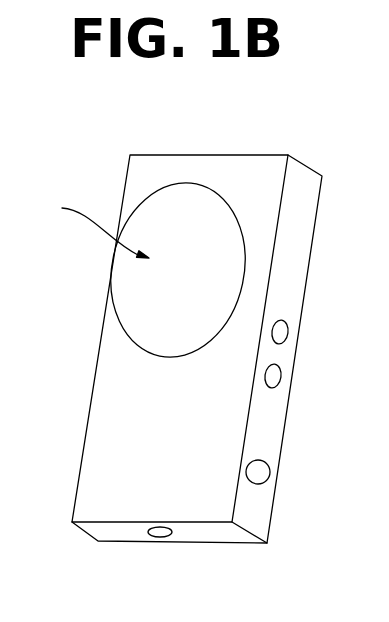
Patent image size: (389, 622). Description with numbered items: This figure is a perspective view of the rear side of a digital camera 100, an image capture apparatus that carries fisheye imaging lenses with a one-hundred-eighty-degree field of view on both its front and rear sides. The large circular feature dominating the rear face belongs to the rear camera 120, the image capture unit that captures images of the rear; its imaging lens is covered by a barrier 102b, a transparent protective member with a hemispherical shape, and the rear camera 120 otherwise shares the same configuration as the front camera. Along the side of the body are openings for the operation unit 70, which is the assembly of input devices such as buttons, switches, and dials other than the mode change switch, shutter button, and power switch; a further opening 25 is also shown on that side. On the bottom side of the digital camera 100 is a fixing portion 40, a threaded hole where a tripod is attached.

The digital camera 100 is at (204, 155).
The barrier 102b is at (132, 300).
The rear camera 120 is at (82, 226).
The operation unit 70 is at (285, 333).
The connector hole 25 is at (265, 473).
The fixing portion 40 is at (158, 540).